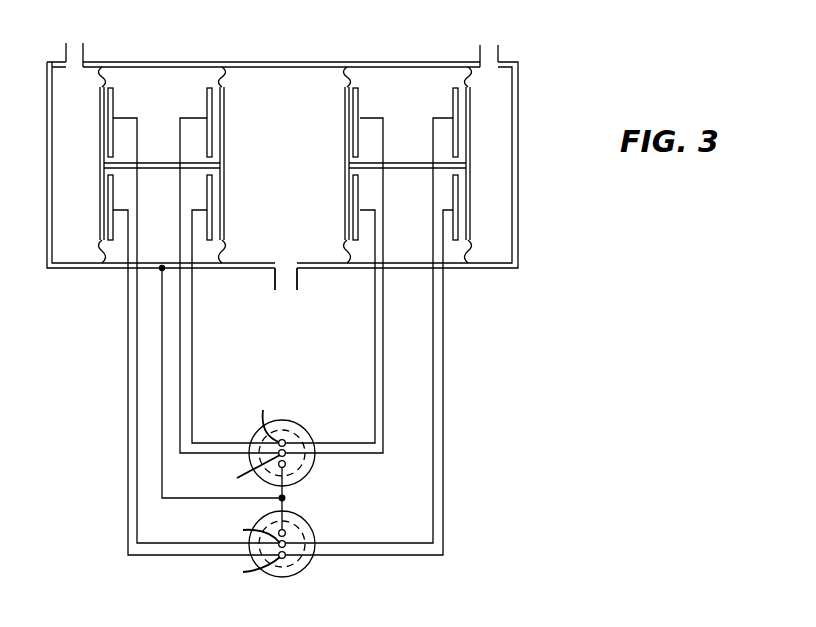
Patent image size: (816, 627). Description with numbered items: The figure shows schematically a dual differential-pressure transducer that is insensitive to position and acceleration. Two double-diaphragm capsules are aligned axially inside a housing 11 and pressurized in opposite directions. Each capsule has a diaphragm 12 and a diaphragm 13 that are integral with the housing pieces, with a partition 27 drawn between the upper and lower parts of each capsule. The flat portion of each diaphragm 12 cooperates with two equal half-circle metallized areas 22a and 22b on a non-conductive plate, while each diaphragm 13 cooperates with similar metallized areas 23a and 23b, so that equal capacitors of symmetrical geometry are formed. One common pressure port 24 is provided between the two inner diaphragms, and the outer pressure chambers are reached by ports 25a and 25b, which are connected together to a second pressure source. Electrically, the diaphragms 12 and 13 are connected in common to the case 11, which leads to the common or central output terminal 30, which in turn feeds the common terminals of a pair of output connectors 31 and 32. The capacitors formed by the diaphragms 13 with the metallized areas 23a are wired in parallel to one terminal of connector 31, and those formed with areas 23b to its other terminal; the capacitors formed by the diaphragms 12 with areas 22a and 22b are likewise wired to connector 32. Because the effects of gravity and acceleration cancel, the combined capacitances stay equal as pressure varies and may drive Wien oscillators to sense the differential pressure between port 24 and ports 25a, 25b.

The housing 11 is at (47, 203).
The diaphragm 12 is at (100, 213).
The diaphragm 13 is at (222, 212).
The metallized area 22a is at (113, 240).
The metallized area 22b is at (118, 98).
The metallized area 23a is at (213, 242).
The metallized area 23b is at (207, 99).
The common pressure port 24 is at (305, 290).
The pressure port 25a is at (84, 58).
The pressure port 25b is at (498, 58).
The partition plate 27 is at (150, 163).
The common output terminal 30 is at (284, 498).
The output connector 31 is at (296, 438).
The output connector 32 is at (294, 534).